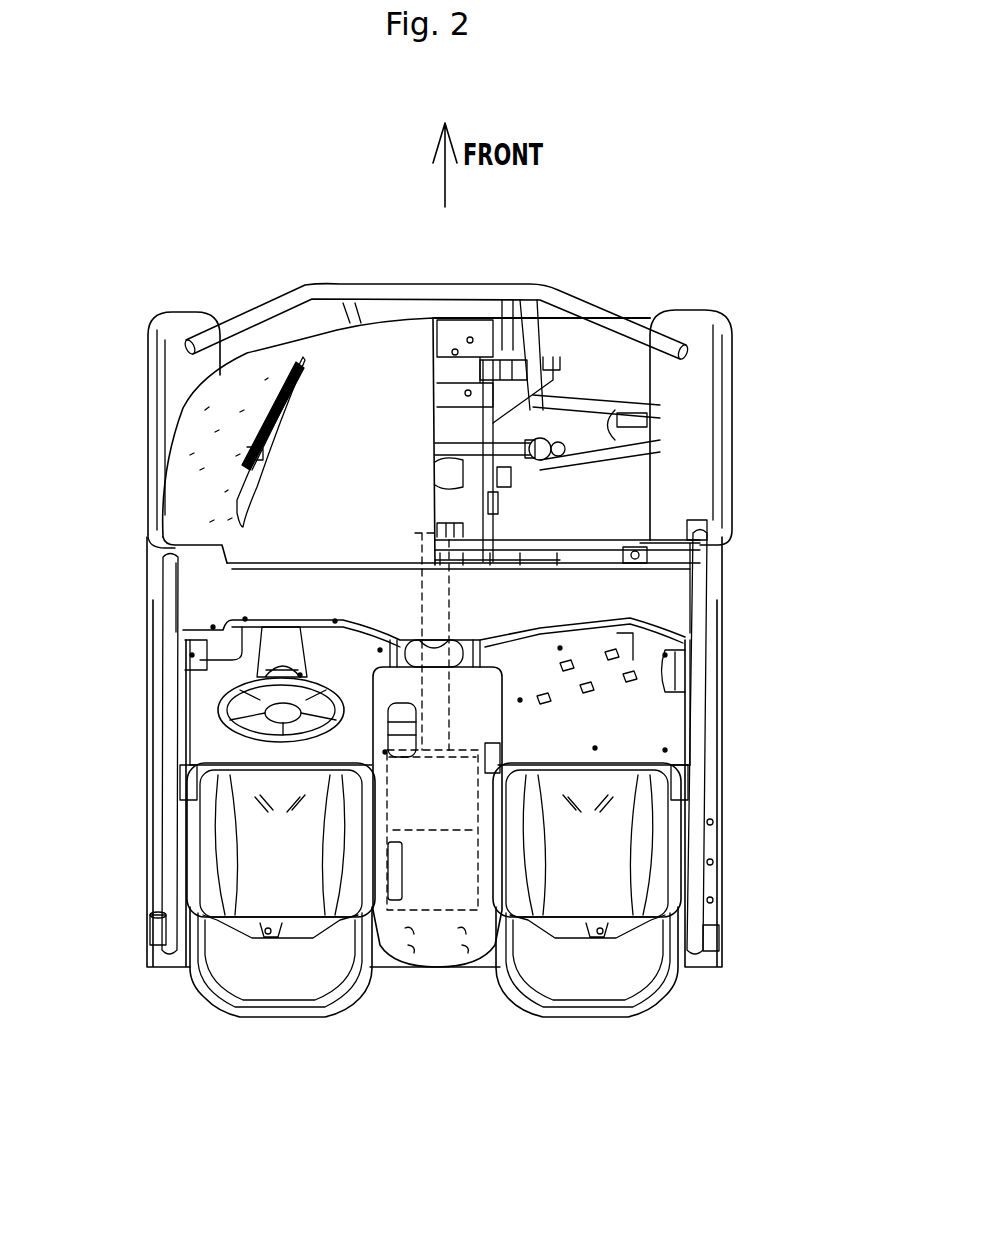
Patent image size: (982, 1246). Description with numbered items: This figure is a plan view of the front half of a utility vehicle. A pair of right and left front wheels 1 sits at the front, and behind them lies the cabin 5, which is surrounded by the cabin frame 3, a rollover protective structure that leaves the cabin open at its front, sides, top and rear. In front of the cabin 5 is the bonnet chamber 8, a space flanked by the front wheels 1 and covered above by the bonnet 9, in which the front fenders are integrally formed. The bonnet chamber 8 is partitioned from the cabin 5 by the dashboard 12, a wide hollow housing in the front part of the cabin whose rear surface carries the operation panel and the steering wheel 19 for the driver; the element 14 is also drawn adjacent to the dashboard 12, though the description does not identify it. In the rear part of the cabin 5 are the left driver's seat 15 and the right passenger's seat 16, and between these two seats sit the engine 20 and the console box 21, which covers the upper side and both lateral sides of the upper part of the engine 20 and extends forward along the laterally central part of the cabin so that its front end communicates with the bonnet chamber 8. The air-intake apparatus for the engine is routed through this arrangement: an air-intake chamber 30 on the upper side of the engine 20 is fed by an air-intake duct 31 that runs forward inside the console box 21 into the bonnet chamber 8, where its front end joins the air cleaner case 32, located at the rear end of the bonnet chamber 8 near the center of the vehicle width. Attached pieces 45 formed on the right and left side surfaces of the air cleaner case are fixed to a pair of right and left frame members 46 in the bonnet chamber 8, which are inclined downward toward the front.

The front wheels 1 is at (185, 372).
The cabin frame 3 is at (695, 867).
The cabin 5 is at (587, 744).
The bonnet chamber 8 is at (595, 345).
The bonnet 9 is at (320, 373).
The dashboard 12 is at (292, 600).
The steering column cover 14 is at (345, 610).
The driver's seat 15 is at (270, 855).
The passenger's seat 16 is at (585, 867).
The steering wheel 19 is at (218, 712).
The engine 20 is at (433, 910).
The console box 21 is at (400, 920).
The air-intake chamber 30 is at (437, 832).
The air-intake duct 31 is at (450, 617).
The air cleaner case 32 is at (463, 428).
The attached pieces 45 is at (497, 500).
The frame members 46 is at (500, 475).